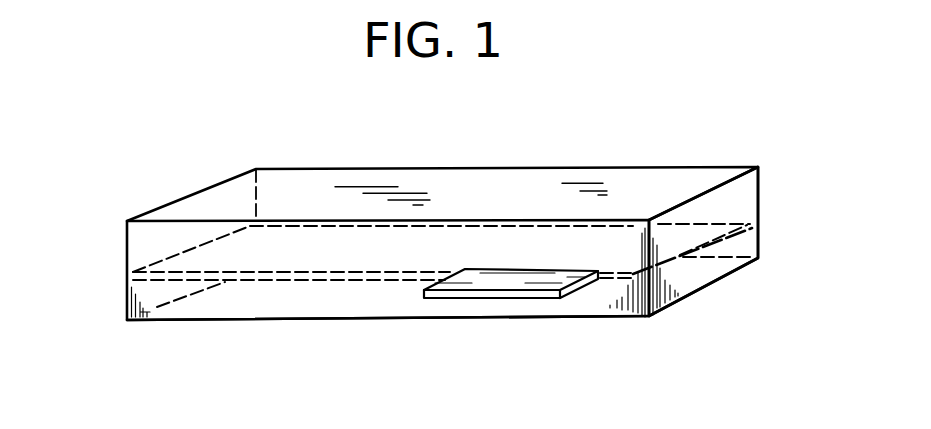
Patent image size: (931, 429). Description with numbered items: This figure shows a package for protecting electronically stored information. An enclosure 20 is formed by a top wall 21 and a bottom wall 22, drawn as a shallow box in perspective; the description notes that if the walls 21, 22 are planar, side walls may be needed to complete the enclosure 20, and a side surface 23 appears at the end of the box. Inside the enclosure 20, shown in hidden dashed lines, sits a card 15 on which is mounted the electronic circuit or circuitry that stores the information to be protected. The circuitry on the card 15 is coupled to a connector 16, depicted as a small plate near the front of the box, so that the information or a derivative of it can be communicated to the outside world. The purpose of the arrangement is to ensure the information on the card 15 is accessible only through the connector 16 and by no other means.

The card 15 is at (176, 258).
The connector 16 is at (507, 296).
The enclosure 20 is at (201, 186).
The top wall 21 is at (402, 164).
The bottom wall 22 is at (294, 325).
The end surface 23 is at (747, 198).